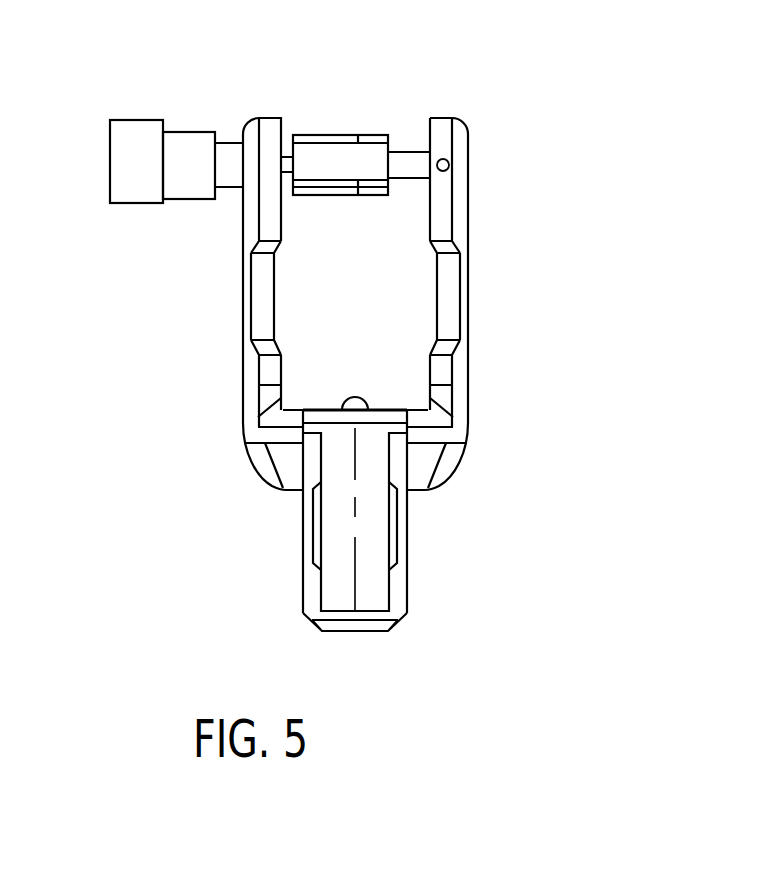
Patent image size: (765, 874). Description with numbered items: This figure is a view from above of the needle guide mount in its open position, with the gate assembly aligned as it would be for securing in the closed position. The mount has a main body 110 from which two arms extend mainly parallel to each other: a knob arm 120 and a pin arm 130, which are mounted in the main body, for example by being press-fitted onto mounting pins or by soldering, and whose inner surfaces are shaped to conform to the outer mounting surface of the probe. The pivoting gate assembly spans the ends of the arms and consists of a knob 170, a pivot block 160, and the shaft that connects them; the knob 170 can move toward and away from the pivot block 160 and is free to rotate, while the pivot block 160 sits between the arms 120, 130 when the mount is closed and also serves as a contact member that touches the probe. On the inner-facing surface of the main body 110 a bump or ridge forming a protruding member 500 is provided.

The main body 110 is at (302, 566).
The knob arm 120 is at (242, 322).
The pin arm 130 is at (470, 282).
The pivot block 160 is at (367, 135).
The knob 170 is at (153, 205).
The protruding member 500 is at (355, 395).